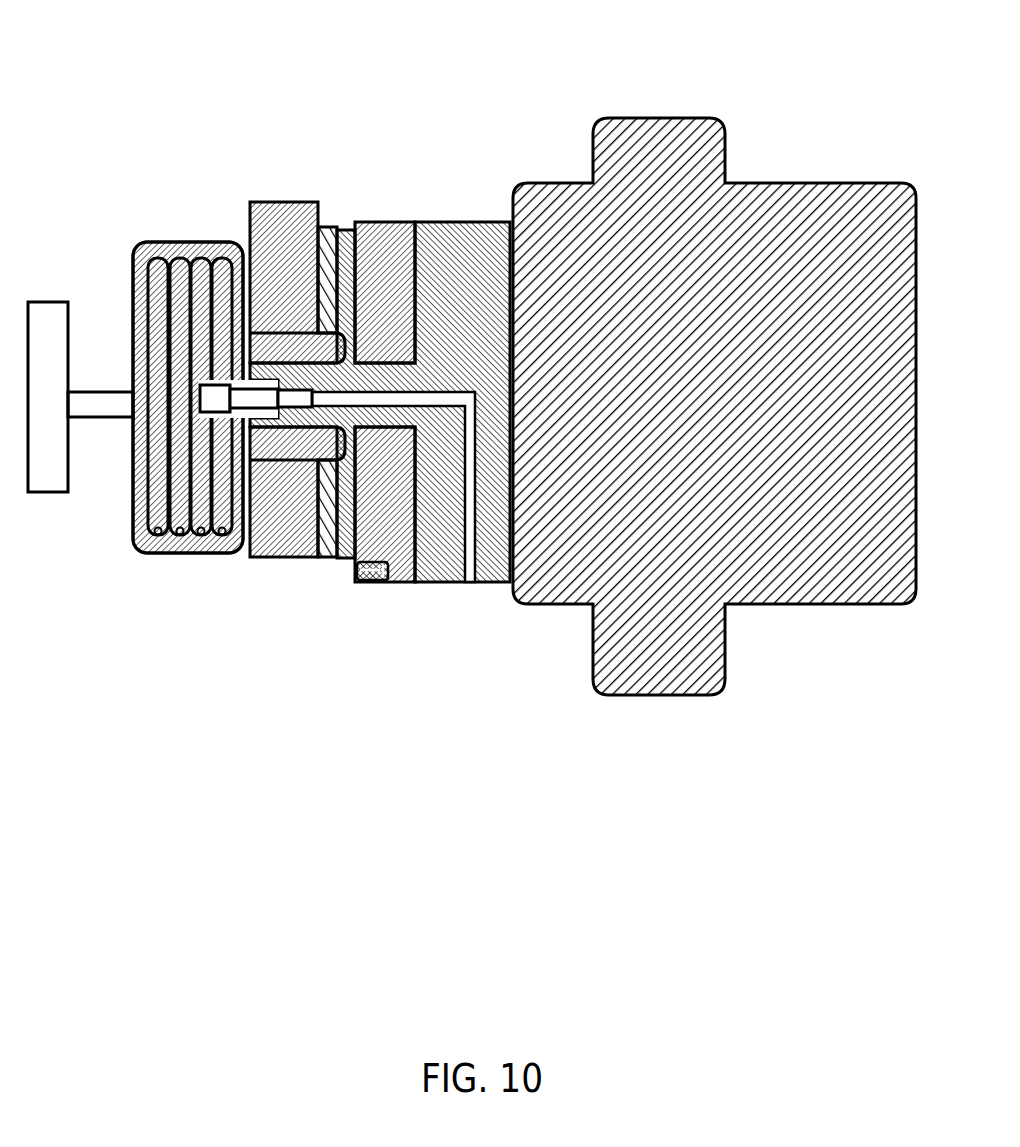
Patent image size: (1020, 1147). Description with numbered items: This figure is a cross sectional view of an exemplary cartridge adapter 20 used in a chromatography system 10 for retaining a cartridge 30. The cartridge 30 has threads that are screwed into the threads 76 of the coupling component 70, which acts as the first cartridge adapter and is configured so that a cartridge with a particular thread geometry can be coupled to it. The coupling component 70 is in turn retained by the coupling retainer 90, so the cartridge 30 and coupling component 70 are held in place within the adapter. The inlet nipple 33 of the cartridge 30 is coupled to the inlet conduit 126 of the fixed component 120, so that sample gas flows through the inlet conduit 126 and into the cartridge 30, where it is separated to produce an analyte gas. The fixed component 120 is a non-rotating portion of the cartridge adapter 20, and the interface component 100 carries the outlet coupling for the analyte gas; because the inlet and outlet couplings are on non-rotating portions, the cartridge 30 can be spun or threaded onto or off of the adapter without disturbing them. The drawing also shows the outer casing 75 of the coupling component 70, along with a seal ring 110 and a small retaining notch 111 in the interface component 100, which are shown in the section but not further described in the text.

The chromatography system 10 is at (607, 228).
The cartridge adapter 20 is at (402, 195).
The cartridge 30 is at (60, 322).
The inlet nipple 33 is at (98, 398).
The coupling component 70 is at (182, 242).
The coil casing 75 is at (112, 275).
The threads 76 is at (176, 553).
The coupling retainer 90 is at (297, 232).
The interface component 100 is at (380, 240).
The seal ring 110 is at (317, 562).
The retaining notch 111 is at (343, 562).
The fixed component 120 is at (488, 222).
The inlet conduit 126 is at (252, 518).